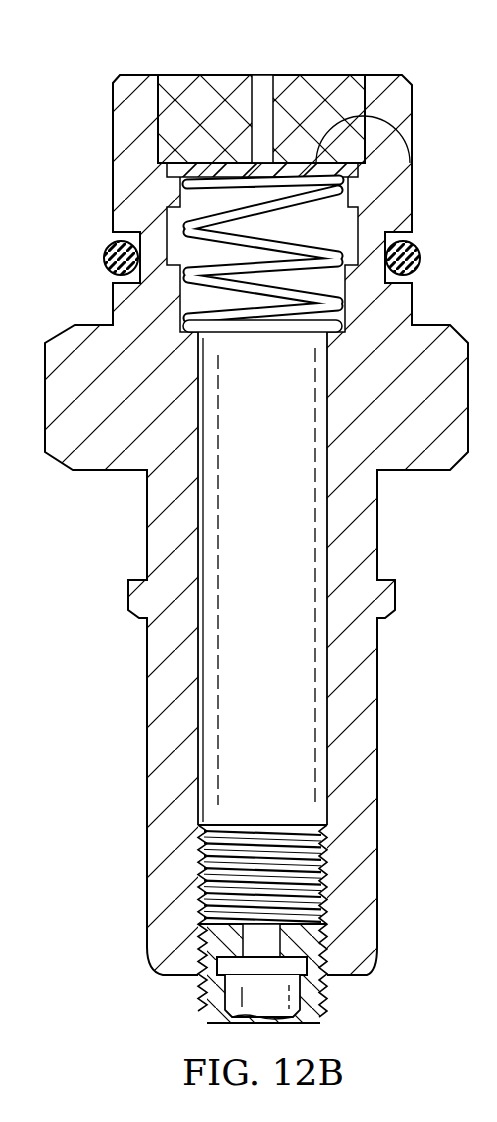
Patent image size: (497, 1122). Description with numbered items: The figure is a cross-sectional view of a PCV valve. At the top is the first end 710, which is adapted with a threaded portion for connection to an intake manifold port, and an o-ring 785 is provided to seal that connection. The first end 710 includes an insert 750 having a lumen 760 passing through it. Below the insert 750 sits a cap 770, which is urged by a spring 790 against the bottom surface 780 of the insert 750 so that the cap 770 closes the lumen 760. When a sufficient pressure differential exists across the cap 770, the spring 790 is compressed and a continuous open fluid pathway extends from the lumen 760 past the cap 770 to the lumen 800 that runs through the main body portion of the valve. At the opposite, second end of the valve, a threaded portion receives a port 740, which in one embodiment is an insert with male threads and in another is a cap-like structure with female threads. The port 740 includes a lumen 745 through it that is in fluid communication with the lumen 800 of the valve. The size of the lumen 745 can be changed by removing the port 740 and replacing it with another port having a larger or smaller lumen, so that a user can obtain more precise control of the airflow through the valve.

The first end 710 is at (412, 93).
The port 740 is at (198, 1002).
The lumen 745 is at (288, 998).
The insert 750 is at (180, 82).
The lumen 760 is at (260, 83).
The cap 770 is at (350, 185).
The bottom surface 780 is at (410, 163).
The o-ring 785 is at (105, 258).
The spring 790 is at (260, 333).
The lumen 800 is at (284, 607).